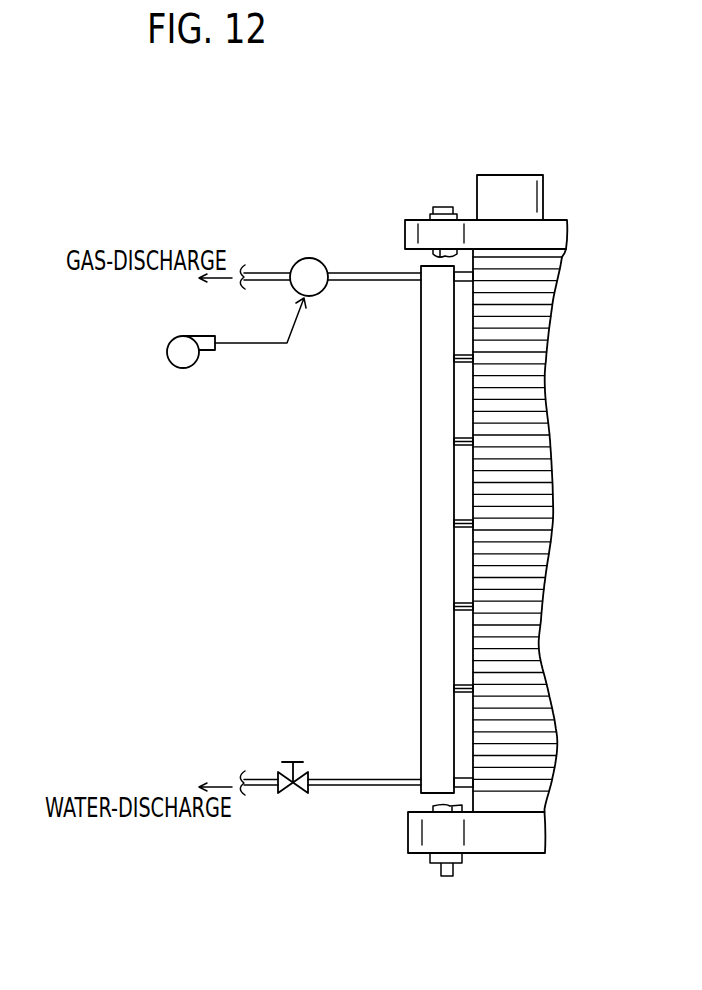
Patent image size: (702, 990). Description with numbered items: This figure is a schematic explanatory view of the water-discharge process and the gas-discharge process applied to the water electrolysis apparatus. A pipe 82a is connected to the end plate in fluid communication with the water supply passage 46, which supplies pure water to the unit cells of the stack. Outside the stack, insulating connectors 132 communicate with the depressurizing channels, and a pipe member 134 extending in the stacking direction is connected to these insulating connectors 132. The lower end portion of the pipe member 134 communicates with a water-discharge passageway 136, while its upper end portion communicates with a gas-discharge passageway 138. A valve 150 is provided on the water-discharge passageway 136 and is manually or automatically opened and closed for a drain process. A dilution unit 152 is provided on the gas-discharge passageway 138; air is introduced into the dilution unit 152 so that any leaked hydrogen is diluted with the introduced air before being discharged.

The pipe 82a is at (488, 159).
The water supply passage 46 is at (477, 189).
The insulating connector 132 is at (467, 437).
The pipe member 134 is at (428, 495).
The water-discharge passageway 136 is at (380, 779).
The gas-discharge passageway 138 is at (371, 282).
The valve 150 is at (293, 797).
The dilution unit 152 is at (307, 258).